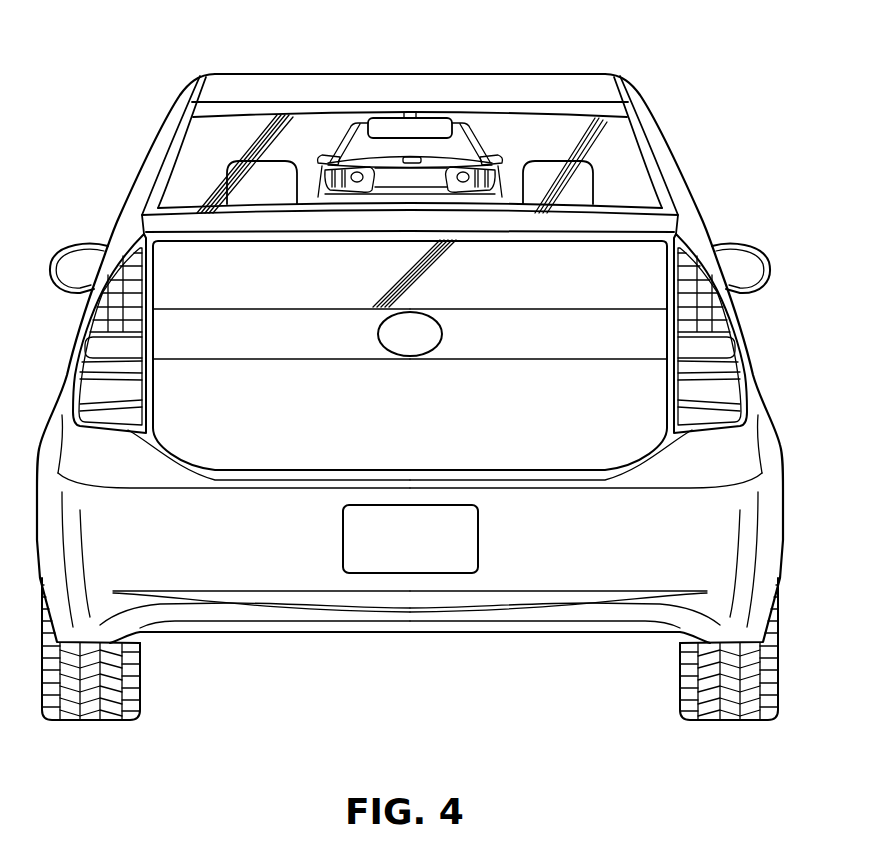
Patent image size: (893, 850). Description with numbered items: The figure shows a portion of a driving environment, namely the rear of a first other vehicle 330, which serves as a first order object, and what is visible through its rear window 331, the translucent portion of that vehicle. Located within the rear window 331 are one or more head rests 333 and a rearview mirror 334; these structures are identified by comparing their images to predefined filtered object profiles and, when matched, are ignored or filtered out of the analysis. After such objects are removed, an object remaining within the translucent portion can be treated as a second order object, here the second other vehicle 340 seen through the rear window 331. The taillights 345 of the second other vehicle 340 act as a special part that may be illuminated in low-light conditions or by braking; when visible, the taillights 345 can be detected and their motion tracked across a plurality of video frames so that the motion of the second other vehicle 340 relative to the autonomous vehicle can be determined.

The first other vehicle 330 is at (133, 158).
The rear window 331 is at (635, 173).
The head rests 333 is at (273, 174).
The rearview mirror 334 is at (428, 125).
The second other vehicle 340 is at (420, 151).
The taillights 345 is at (336, 174).